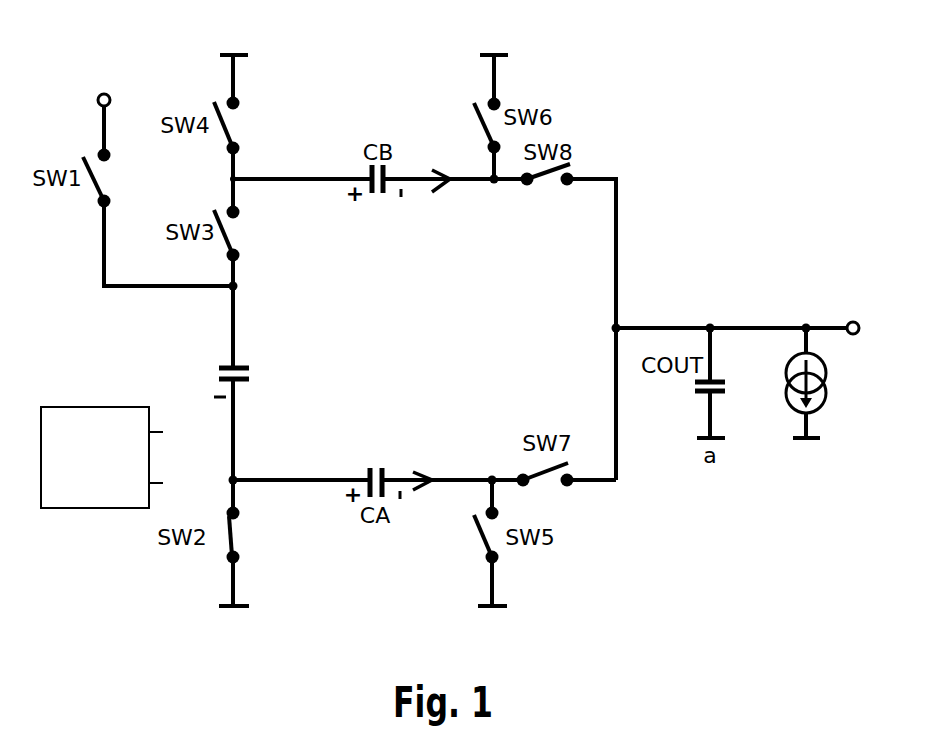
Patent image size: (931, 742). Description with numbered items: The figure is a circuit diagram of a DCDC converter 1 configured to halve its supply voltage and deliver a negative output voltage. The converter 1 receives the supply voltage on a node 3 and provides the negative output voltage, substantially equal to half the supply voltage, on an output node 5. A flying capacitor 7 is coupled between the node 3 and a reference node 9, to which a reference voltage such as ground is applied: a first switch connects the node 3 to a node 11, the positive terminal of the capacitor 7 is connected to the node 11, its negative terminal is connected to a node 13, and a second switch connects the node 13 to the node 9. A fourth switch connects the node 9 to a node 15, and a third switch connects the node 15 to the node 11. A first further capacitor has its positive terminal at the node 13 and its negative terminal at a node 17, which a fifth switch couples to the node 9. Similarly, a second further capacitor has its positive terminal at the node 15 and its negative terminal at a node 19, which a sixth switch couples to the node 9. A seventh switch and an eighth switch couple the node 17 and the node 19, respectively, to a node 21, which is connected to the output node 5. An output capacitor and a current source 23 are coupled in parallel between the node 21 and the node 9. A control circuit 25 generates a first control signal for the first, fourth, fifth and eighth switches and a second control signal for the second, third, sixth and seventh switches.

The DCDC converter 1 is at (700, 165).
The node 3 is at (97, 102).
The output node 5 is at (859, 333).
The capacitor 7 is at (240, 360).
The reference node 9 is at (238, 55).
The node 11 is at (239, 286).
The node 13 is at (236, 478).
The node 15 is at (233, 179).
The node 17 is at (492, 478).
The node 19 is at (494, 183).
The node 21 is at (616, 328).
The current source 23 is at (826, 395).
The control circuit 25 is at (90, 407).